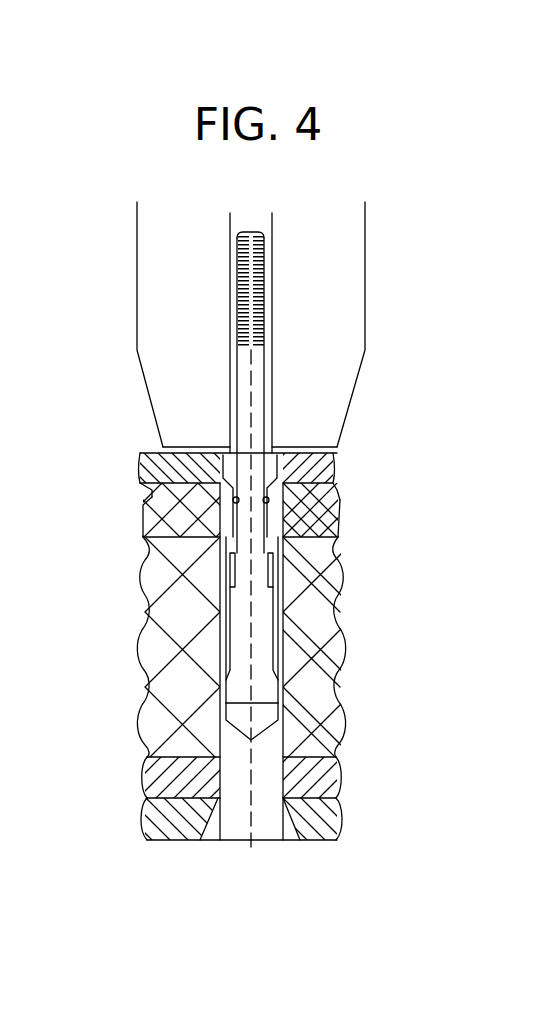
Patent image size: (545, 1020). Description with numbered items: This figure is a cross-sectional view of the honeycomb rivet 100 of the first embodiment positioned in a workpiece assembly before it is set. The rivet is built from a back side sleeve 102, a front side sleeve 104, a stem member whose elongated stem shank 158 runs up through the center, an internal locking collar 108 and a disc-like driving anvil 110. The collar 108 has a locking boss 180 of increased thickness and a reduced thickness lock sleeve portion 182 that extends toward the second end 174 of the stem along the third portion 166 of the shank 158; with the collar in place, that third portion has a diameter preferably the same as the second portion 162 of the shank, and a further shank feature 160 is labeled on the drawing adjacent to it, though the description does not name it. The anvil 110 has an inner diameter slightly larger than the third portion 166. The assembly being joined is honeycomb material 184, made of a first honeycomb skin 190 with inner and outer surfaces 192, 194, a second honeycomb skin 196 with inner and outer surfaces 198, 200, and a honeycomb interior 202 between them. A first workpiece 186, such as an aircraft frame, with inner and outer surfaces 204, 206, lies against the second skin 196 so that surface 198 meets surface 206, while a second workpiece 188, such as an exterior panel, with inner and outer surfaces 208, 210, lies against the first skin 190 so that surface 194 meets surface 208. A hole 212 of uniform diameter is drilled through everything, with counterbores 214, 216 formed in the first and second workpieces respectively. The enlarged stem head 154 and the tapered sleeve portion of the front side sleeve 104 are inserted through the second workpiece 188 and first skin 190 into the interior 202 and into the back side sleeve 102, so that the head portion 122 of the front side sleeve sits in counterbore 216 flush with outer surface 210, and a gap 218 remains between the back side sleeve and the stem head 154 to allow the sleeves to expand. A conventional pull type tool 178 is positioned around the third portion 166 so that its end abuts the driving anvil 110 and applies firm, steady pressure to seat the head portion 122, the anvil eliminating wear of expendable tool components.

The honeycomb rivet 100 is at (113, 410).
The back side sleeve 102 is at (213, 660).
The front side sleeve 104 is at (150, 580).
The internal locking collar 108 is at (263, 502).
The driving anvil 110 is at (280, 447).
The head portion of the front side sleeve 122 is at (200, 447).
The enlarged stem head 154 is at (272, 693).
The elongated stem shank 158 is at (260, 377).
The collar 160 is at (263, 635).
The second portion of the elongated stem shank 162 is at (262, 558).
The third portion of the elongated stem shank 166 is at (253, 413).
The second end of the stem member 174 is at (253, 233).
The pull type tool 178 is at (353, 278).
The locking boss 180 is at (150, 522).
The lock sleeve portion 182 is at (150, 487).
The honeycomb material 184 is at (322, 600).
The first workpiece 186 is at (330, 838).
The second workpiece 188 is at (327, 473).
The first honeycomb skin 190 is at (337, 530).
The inner surface of the first honeycomb skin 192 is at (335, 540).
The outer surface of the first honeycomb skin 194 is at (152, 498).
The second honeycomb skin 196 is at (337, 773).
The inner surface of the second honeycomb skin 198 is at (145, 792).
The outer surface of the second honeycomb skin 200 is at (127, 763).
The honeycomb interior 202 is at (307, 687).
The inner surface of the first workpiece 204 is at (152, 840).
The outer surface of the first workpiece 206 is at (337, 815).
The inner surface of the second workpiece 208 is at (333, 485).
The outer surface of the second workpiece 210 is at (152, 458).
The hole 212 is at (197, 840).
The counterbore 214 is at (290, 838).
The counterbore 216 is at (307, 457).
The gap 218 is at (270, 718).